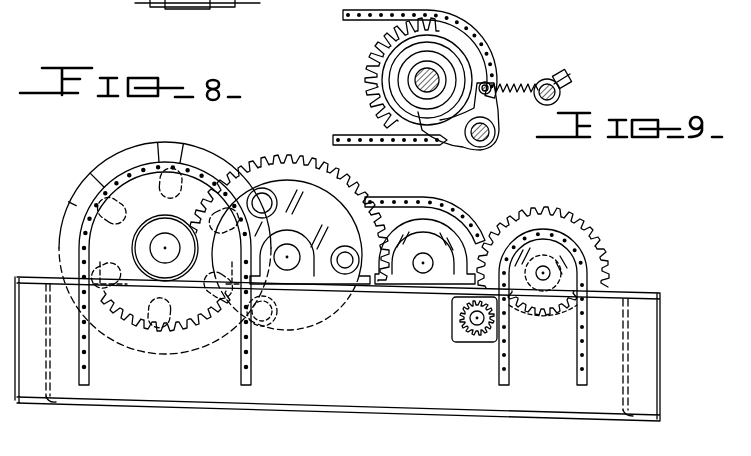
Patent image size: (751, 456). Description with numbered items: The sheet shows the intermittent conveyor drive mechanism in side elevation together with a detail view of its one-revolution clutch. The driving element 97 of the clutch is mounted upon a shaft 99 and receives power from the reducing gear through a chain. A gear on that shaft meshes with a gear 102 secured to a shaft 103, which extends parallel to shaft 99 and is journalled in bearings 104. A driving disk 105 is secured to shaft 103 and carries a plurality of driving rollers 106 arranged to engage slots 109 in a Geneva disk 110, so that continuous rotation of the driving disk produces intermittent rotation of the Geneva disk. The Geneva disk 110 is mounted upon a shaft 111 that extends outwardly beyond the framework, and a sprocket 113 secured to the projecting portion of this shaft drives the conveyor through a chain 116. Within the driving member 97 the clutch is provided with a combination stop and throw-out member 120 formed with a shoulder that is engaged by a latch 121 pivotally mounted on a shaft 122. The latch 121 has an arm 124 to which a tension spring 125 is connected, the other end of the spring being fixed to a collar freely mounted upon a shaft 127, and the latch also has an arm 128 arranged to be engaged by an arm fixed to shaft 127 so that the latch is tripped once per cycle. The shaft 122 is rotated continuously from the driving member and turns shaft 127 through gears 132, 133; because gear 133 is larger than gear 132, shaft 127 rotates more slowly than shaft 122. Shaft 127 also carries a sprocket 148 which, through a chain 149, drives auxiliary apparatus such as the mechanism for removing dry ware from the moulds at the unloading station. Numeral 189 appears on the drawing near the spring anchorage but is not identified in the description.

In FIG. 9, the driving element 97 is at (390, 50).
In FIG. 8, the shaft 99 is at (420, 274).
In FIG. 9, the shaft 99 is at (413, 74).
In FIG. 8, the gear 102 is at (266, 168).
In FIG. 8, the shaft 103 is at (291, 250).
In FIG. 9, the bearings 104 is at (288, 6).
In FIG. 8, the driving disk 105 is at (332, 197).
In FIG. 9, the driving disk 105 is at (415, 77).
In FIG. 8, the driving rollers 106 is at (347, 272).
In FIG. 8, the slots 109 is at (187, 144).
In FIG. 8, the Geneva disk 110 is at (204, 166).
In FIG. 8, the shaft 111 is at (168, 243).
In FIG. 8, the sprocket 113 is at (201, 332).
In FIG. 9, the sprocket 113 is at (193, 5).
In FIG. 8, the chain 116 is at (249, 352).
In FIG. 9, the chain 116 is at (90, 0).
In FIG. 9, the combination stop and throw-out member 120 is at (458, 68).
In FIG. 9, the latch 121 is at (462, 133).
In FIG. 8, the shaft 122 is at (473, 322).
In FIG. 9, the shaft 122 is at (490, 149).
In FIG. 9, the arm 124 is at (477, 103).
In FIG. 9, the tension spring 125 is at (512, 100).
In FIG. 9, the shaft 127 is at (500, 112).
In FIG. 9, the arm 128 is at (493, 135).
In FIG. 8, the gear 132 is at (479, 344).
In FIG. 8, the gear 133 is at (580, 236).
In FIG. 8, the sprocket 148 is at (568, 264).
In FIG. 8, the chain 149 is at (506, 370).
In FIG. 9, the chain 149 is at (583, 0).
In FIG. 9, the nut 189 is at (525, 112).